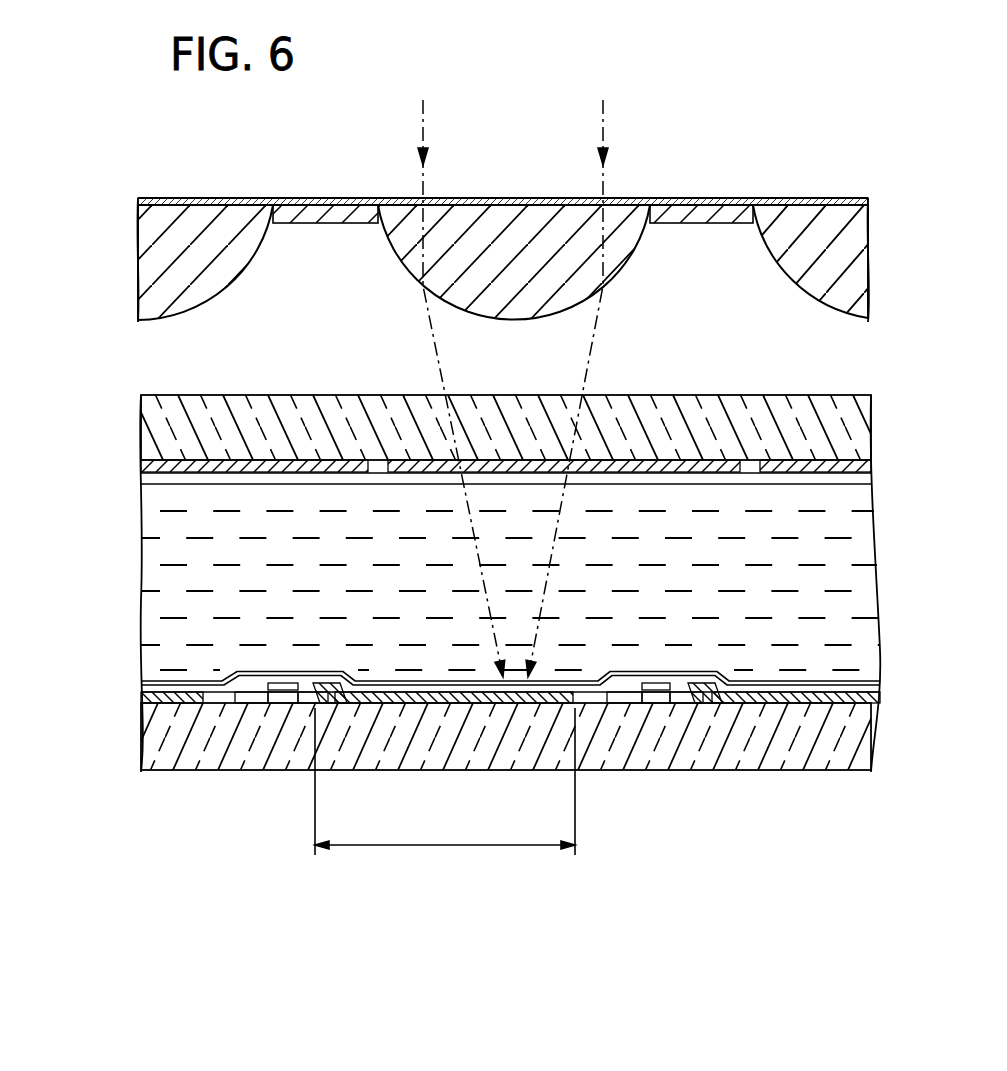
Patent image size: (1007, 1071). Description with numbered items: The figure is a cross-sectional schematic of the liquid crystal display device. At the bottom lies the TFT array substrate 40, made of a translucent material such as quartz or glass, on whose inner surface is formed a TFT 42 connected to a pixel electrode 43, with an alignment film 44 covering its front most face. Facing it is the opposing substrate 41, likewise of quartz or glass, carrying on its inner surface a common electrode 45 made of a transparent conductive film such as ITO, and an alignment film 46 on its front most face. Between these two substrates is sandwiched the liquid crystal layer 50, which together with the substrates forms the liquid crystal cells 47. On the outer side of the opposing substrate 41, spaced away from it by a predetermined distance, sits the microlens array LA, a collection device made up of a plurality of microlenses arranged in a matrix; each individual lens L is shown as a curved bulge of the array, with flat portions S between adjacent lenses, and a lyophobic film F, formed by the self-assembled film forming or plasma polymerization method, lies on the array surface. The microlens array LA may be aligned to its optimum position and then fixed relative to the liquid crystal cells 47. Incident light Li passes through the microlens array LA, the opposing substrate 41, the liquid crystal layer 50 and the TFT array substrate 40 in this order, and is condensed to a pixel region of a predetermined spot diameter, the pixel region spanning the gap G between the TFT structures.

The TFT array substrate 40 is at (876, 731).
The opposing substrate 41 is at (855, 432).
The TFT 42 is at (303, 668).
The pixel electrode 43 is at (500, 704).
The alignment film 44 is at (877, 687).
The common electrode 45 is at (871, 467).
The alignment film 46 is at (872, 476).
The liquid crystal cells 47 is at (857, 380).
The liquid crystal layer 50 is at (853, 581).
The microlens array LA is at (752, 200).
The lens L is at (537, 222).
The lyophobic film F is at (458, 198).
The flat portion S is at (319, 198).
The incident light Li is at (603, 128).
The gap between TFTs G is at (445, 793).